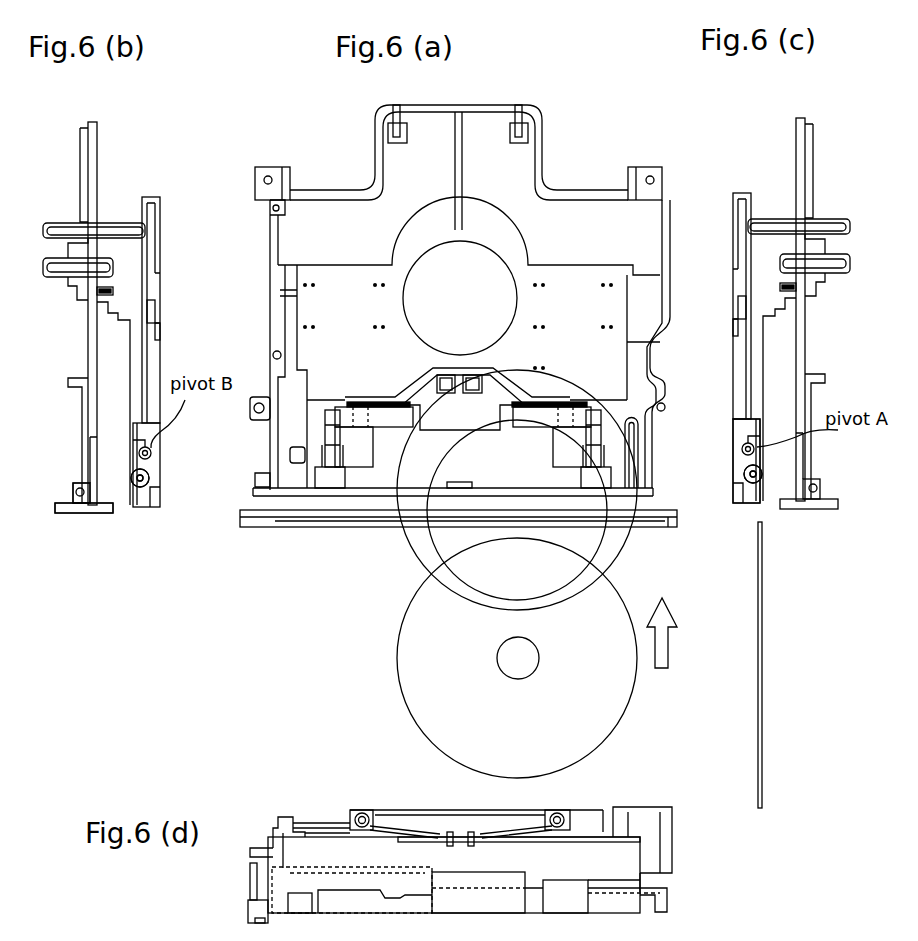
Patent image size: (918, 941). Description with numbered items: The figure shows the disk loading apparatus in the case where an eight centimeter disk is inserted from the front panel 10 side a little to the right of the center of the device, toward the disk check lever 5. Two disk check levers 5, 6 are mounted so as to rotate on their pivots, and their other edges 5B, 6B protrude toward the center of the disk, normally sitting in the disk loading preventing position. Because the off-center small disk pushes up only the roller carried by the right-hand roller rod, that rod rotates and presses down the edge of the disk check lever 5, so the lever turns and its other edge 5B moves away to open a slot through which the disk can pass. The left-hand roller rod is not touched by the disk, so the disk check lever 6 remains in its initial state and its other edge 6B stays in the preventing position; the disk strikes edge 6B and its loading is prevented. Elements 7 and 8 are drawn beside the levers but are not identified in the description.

The disk check lever 5 is at (530, 412).
The other edge of disk check lever 5B is at (500, 415).
The disk check lever 6 is at (384, 412).
The other edge of disk check lever 6B is at (430, 390).
The right guide bar 7 is at (588, 401).
The left guide bar 8 is at (336, 403).
The front panel 10 is at (680, 524).